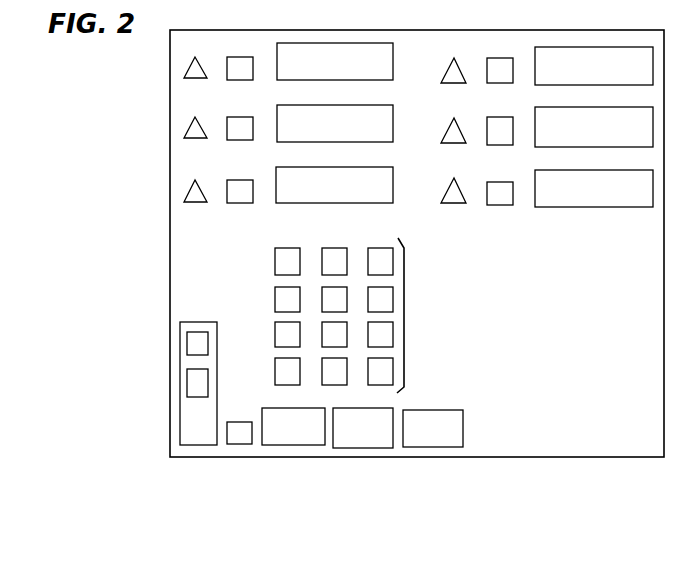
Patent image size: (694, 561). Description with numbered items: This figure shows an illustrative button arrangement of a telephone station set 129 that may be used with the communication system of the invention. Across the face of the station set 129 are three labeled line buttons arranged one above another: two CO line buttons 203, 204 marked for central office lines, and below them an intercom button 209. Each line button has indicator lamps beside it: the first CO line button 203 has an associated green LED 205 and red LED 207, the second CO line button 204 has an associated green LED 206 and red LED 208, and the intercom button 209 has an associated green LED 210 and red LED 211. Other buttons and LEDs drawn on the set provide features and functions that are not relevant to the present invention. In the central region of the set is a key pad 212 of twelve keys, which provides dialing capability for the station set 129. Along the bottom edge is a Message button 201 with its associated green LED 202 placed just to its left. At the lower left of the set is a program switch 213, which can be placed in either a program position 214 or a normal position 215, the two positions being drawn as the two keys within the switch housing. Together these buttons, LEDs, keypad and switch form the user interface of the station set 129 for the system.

The station set 129 is at (170, 52).
The Message button 201 is at (297, 446).
The green LED 202 is at (243, 445).
The CO line button 203 is at (394, 74).
The CO line button 204 is at (394, 136).
The green LED 205 is at (241, 80).
The green LED 206 is at (241, 140).
The red LED 207 is at (195, 79).
The red LED 208 is at (200, 139).
The intercom button 209 is at (394, 197).
The green LED 210 is at (233, 203).
The red LED 211 is at (200, 203).
The key pad 212 is at (404, 328).
The program switch 213 is at (199, 322).
The program position 214 is at (187, 385).
The normal position 215 is at (187, 343).